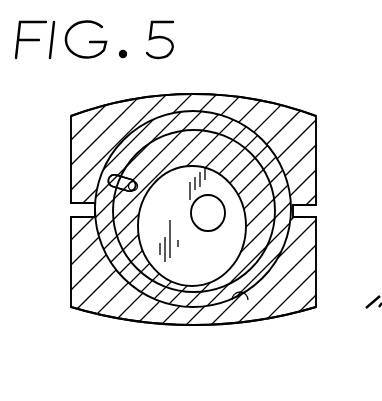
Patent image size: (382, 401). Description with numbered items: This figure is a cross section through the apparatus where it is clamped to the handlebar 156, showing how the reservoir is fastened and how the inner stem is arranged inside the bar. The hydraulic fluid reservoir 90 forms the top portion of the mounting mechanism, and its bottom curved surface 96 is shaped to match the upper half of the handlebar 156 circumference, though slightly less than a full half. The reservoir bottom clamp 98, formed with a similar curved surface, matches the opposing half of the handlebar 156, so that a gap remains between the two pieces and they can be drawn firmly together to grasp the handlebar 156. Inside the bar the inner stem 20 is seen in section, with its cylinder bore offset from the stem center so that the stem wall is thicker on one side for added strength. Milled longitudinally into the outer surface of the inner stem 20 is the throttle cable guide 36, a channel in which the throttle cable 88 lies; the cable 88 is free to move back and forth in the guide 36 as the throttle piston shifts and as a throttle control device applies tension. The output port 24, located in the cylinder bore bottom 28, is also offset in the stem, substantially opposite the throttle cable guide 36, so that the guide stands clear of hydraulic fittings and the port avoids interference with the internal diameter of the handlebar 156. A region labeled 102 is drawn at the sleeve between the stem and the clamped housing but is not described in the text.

The inner stem 20 is at (221, 143).
The hydraulic fluid reservoir 90 is at (316, 127).
The reservoir bottom clamp 98 is at (316, 262).
The bottom curved surface 96 is at (286, 168).
The inner sleeve surface 102 is at (286, 243).
The cylinder bore bottom 28 is at (189, 267).
The output port 24 is at (191, 214).
The throttle cable 88 is at (128, 182).
The throttle cable guide 36 is at (122, 198).
The handlebar 156 is at (240, 291).